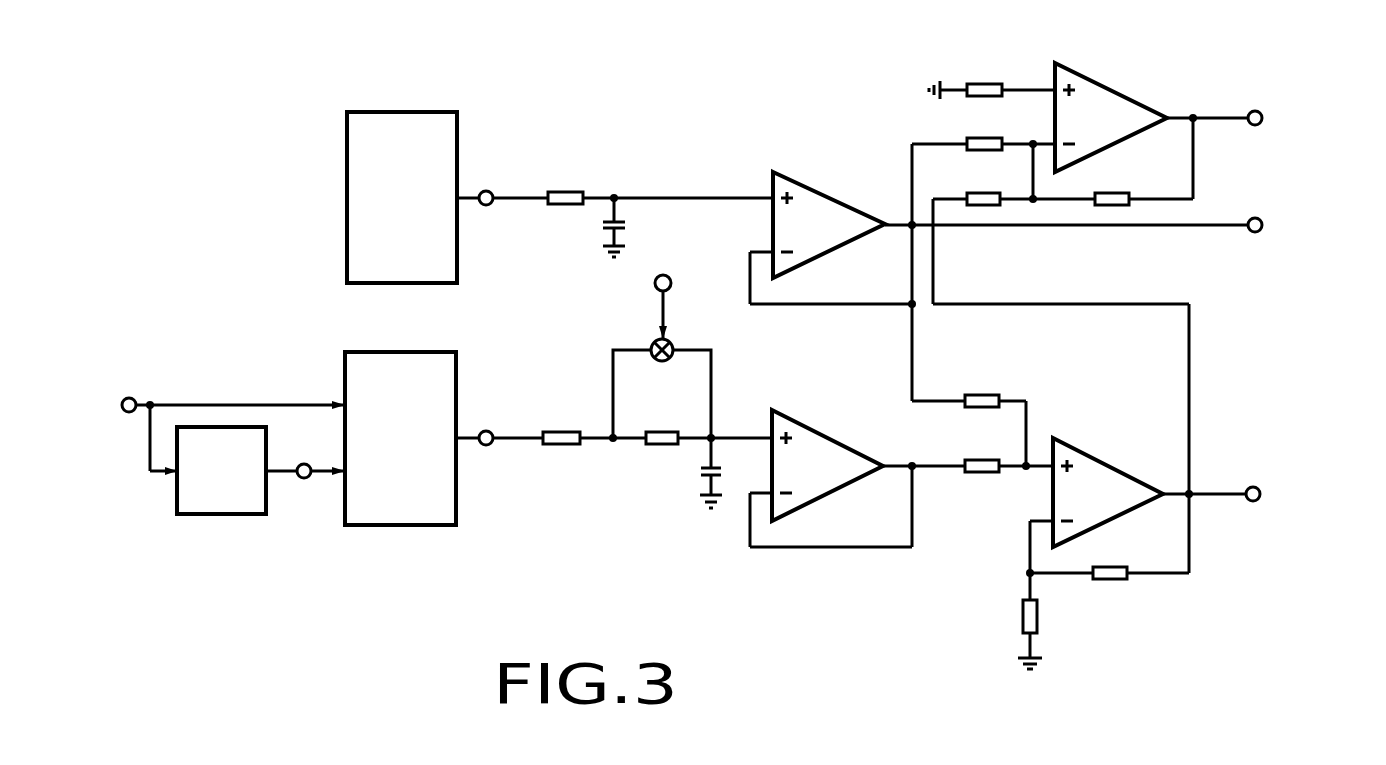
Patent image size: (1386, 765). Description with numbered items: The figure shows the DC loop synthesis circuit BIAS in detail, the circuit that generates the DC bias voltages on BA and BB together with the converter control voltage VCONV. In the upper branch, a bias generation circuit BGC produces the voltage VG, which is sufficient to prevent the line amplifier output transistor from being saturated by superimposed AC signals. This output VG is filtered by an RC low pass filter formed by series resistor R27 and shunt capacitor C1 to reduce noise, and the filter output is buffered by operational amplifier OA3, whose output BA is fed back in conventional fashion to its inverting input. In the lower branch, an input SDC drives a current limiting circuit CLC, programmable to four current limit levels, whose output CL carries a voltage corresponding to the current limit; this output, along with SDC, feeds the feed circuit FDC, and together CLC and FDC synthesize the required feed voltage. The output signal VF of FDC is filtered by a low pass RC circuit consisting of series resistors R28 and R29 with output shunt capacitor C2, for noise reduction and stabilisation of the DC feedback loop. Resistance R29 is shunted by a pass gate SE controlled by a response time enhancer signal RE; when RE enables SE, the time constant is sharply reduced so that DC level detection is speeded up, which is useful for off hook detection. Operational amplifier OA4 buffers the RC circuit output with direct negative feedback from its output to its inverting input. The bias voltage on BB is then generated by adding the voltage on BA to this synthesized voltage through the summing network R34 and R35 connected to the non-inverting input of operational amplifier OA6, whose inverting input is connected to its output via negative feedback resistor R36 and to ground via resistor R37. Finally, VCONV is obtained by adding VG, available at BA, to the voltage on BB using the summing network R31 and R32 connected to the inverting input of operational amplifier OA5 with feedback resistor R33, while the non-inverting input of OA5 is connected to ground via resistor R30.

The DC loop synthesis circuit BIAS is at (668, 68).
The bias generation circuit BGC is at (402, 197).
The feed circuit FDC is at (400, 438).
The current limiting circuit CLC is at (221, 470).
The SDC input SDC is at (200, 432).
The CLC output CL is at (305, 455).
The bias voltage VG is at (502, 184).
The feed circuit output signal VF is at (499, 423).
The response time enhancer signal RE is at (662, 294).
The pass gate SE is at (662, 388).
The low pass filter resistor R27 is at (653, 180).
The series resistor R28 is at (590, 423).
The series resistor R29 is at (702, 423).
The resistor R30 is at (992, 78).
The summing network resistor R31 is at (983, 154).
The summing network resistor R32 is at (1061, 369).
The feedback resistor R33 is at (1139, 161).
The summing network resistor R34 is at (971, 414).
The summing network resistor R35 is at (968, 448).
The negative feedback resistor R36 is at (1109, 557).
The resistor R37 is at (1061, 621).
The low pass filter capacitor C1 is at (635, 225).
The output shunt capacitor C2 is at (683, 473).
The operational amplifier OA3 is at (999, 240).
The operational amplifier OA4 is at (831, 478).
The operational amplifier OA5 is at (1151, 117).
The operational amplifier OA6 is at (1136, 507).
The converter control voltage VCONV is at (1306, 120).
The bias voltage output BA is at (1281, 227).
The bias voltage output BB is at (1280, 496).